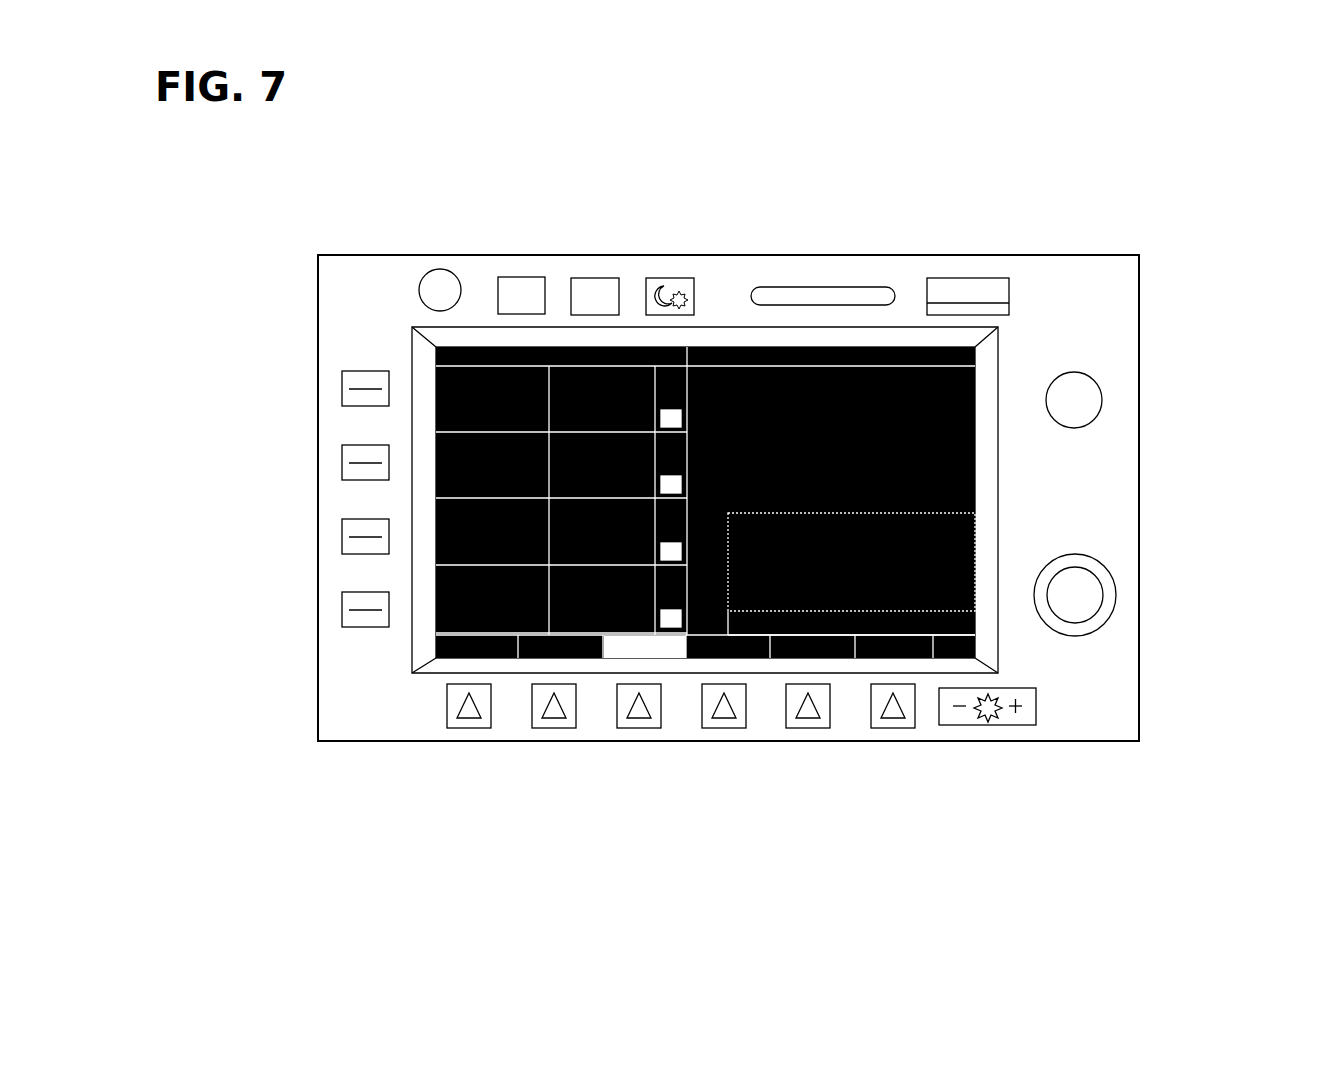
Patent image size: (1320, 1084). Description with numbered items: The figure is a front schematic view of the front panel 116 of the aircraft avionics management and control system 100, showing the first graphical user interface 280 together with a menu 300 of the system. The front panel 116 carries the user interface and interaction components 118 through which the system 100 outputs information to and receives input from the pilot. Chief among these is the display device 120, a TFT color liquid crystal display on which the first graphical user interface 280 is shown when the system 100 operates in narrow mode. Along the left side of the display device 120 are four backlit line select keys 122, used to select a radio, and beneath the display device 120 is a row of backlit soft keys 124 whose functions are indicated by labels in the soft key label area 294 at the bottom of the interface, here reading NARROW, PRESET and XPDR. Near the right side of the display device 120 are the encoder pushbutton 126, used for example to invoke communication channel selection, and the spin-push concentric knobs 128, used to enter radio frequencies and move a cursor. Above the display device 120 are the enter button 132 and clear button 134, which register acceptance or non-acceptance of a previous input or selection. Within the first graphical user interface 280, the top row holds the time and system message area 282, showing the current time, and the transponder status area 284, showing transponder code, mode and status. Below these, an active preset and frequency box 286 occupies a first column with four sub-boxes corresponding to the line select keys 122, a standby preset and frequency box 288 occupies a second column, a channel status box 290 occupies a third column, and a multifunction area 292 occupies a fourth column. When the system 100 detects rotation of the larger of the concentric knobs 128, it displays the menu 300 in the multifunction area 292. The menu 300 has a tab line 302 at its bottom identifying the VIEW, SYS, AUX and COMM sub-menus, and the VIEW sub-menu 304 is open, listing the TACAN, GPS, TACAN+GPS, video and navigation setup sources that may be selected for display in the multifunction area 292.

The aircraft avionics management and control system 100 is at (268, 218).
The front panel 116 is at (325, 690).
The user interface and interaction components 118 is at (751, 511).
The display device 120 is at (967, 368).
The line select keys 122 is at (334, 365).
The soft keys 124 is at (948, 798).
The encoder pushbutton 126 is at (1092, 375).
The spin-push concentric knobs 128 is at (1090, 618).
The enter button 132 is at (497, 268).
The clear button 134 is at (590, 270).
The first graphical user interface 280 is at (717, 320).
The time and system message area 282 is at (418, 343).
The transponder status area 284 is at (816, 320).
The active preset and frequency box 286 is at (481, 327).
The standby preset and frequency box 288 is at (585, 320).
The channel status box 290 is at (657, 322).
The multifunction area 292 is at (975, 473).
The soft key label area 294 is at (428, 635).
The menu 300 is at (969, 543).
The tab line 302 is at (975, 613).
The VIEW sub-menu 304 is at (967, 567).